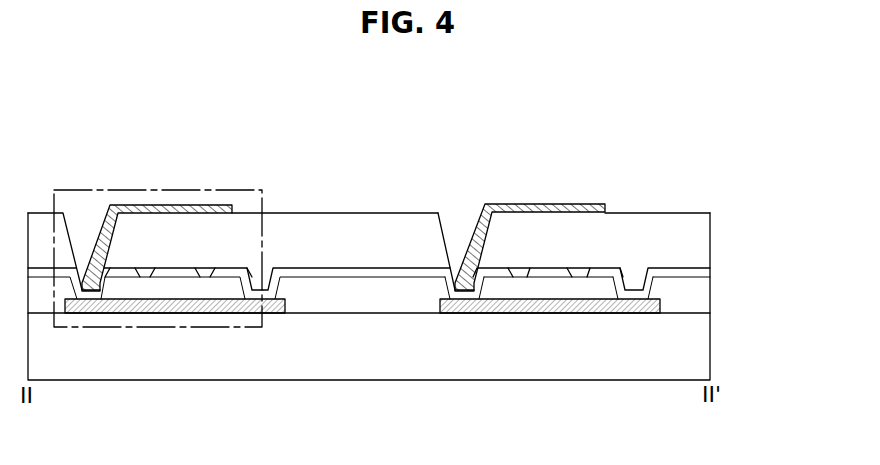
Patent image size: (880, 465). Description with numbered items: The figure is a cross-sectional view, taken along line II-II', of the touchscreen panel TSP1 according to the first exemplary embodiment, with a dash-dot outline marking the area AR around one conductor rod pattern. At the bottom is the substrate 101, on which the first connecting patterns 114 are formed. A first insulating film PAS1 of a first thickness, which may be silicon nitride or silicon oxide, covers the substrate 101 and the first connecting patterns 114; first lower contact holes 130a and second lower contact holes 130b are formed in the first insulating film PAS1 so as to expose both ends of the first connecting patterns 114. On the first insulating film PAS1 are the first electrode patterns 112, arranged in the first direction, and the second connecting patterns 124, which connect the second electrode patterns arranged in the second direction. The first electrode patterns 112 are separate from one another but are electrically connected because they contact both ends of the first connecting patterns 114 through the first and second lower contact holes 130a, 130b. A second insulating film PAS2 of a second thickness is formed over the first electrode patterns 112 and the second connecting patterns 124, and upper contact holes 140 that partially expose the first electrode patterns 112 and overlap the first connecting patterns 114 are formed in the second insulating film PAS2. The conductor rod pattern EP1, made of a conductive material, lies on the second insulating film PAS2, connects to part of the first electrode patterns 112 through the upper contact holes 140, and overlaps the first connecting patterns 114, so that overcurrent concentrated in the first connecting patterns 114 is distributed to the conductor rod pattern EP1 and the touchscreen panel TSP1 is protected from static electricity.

The touchscreen panel TSP1 is at (82, 125).
The area AR is at (145, 190).
The conductor rod pattern EP1 is at (205, 203).
The first electrode patterns 112 is at (352, 273).
The upper contact holes 140 is at (470, 245).
The second connecting patterns 124 is at (548, 272).
The second insulating film PAS2 is at (703, 238).
The first insulating film PAS1 is at (703, 295).
The substrate 101 is at (703, 342).
The first lower contact holes 130a is at (462, 286).
The first connecting patterns 114 is at (552, 306).
The second lower contact holes 130b is at (637, 280).